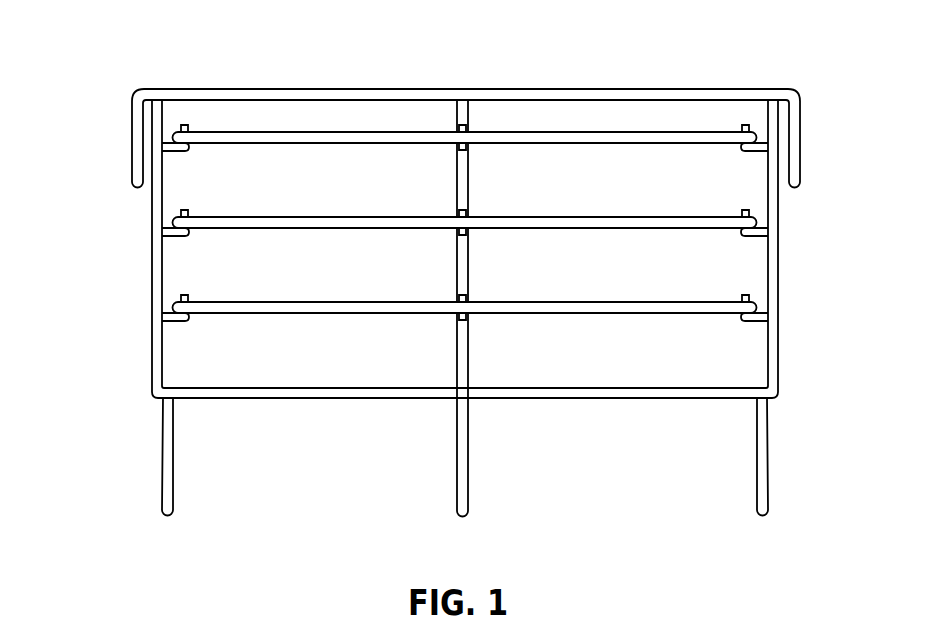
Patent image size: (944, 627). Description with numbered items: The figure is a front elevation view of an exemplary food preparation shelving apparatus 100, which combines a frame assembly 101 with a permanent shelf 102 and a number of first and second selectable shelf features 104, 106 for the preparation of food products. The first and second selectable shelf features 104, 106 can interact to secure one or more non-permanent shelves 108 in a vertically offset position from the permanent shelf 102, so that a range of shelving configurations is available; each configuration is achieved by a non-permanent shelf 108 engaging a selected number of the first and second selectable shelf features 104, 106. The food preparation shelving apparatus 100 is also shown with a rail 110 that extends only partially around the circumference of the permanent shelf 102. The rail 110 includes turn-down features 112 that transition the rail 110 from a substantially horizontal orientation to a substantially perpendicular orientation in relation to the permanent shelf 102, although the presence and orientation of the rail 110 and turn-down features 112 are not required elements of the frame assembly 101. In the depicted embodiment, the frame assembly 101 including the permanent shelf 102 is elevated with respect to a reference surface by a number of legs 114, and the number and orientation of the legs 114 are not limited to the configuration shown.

The food preparation shelving apparatus 100 is at (122, 46).
The frame assembly 101 is at (778, 369).
The permanent shelf 102 is at (622, 400).
The first selectable shelf feature 104 is at (727, 165).
The second selectable shelf feature 106 is at (482, 285).
The non-permanent shelf 108 is at (327, 230).
The rail 110 is at (528, 90).
The turn-down feature 112 is at (130, 167).
The leg 114 is at (173, 443).